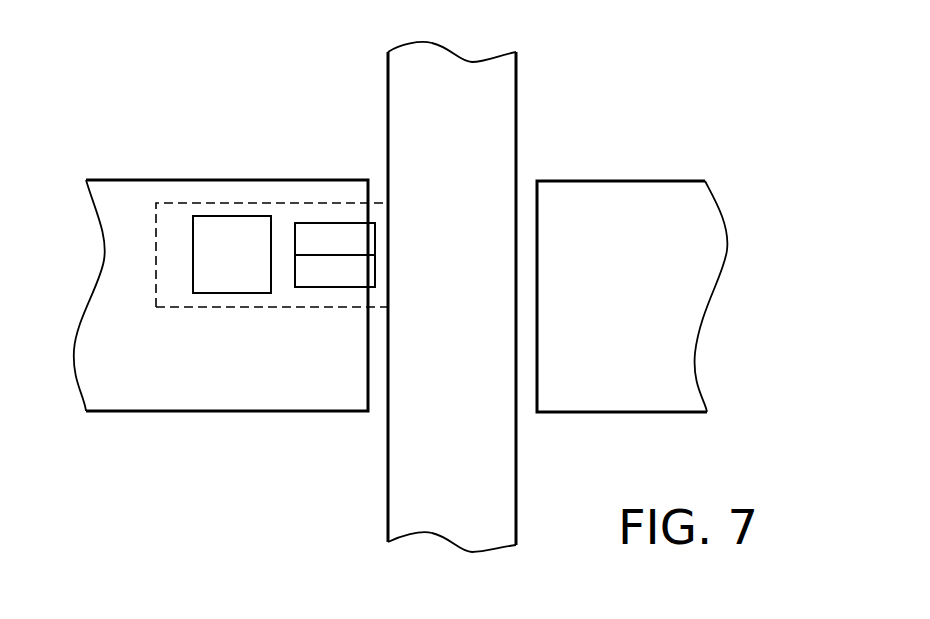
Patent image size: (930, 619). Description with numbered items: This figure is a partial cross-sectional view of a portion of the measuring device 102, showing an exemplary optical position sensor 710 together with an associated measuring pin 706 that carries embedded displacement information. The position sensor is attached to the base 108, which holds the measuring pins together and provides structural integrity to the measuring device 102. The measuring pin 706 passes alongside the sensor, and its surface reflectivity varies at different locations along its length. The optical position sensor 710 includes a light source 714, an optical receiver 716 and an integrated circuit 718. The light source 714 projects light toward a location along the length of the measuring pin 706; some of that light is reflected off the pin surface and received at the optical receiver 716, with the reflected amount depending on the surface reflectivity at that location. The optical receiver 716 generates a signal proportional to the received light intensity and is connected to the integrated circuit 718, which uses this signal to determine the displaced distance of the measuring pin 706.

The measuring device 102 is at (705, 52).
The base 108 is at (122, 180).
The measuring pin 706 is at (516, 78).
The optical position sensor 710 is at (240, 203).
The light source 714 is at (323, 223).
The optical receiver 716 is at (337, 287).
The integrated circuit 718 is at (212, 293).